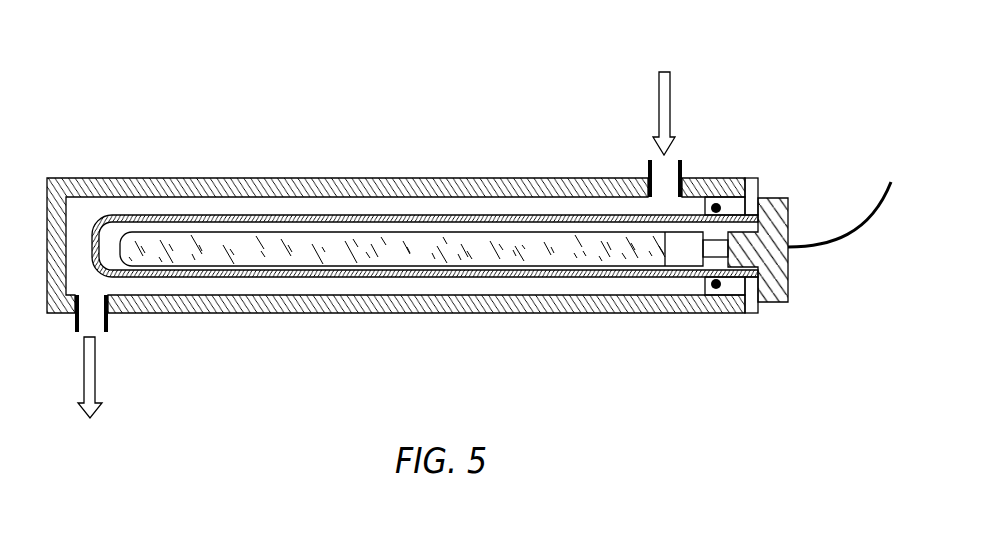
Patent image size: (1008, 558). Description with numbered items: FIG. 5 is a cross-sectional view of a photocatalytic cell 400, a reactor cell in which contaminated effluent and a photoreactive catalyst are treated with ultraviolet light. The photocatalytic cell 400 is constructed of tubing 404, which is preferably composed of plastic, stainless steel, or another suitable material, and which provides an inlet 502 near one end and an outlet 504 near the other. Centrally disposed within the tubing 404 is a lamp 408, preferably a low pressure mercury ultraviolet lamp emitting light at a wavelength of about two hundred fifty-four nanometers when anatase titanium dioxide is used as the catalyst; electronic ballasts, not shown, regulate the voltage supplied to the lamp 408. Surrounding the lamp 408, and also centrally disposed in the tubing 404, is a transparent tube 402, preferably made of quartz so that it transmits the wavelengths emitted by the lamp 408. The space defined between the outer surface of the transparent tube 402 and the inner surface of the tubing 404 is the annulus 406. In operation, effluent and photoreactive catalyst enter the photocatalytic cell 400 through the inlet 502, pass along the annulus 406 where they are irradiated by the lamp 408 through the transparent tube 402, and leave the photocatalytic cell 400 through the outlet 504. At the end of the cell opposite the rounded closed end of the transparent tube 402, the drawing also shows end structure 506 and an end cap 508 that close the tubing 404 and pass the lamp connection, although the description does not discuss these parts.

The photocatalytic cell 400 is at (343, 66).
The transparent tube 402 is at (405, 216).
The tubing 404 is at (162, 178).
The annulus 406 is at (248, 214).
The lamp 408 is at (332, 247).
The inlet 502 is at (663, 100).
The outlet 504 is at (90, 395).
The end piece 506 is at (751, 313).
The end cap 508 is at (772, 197).